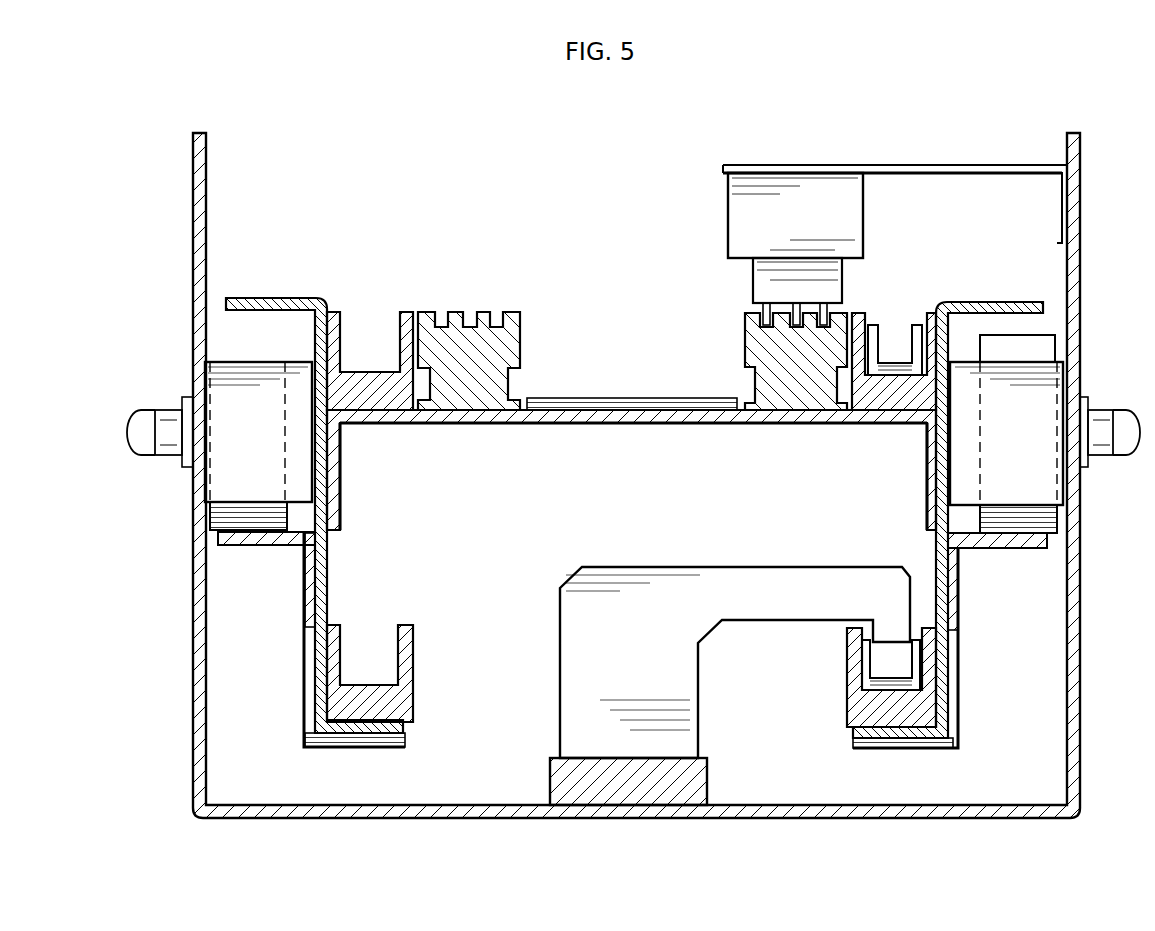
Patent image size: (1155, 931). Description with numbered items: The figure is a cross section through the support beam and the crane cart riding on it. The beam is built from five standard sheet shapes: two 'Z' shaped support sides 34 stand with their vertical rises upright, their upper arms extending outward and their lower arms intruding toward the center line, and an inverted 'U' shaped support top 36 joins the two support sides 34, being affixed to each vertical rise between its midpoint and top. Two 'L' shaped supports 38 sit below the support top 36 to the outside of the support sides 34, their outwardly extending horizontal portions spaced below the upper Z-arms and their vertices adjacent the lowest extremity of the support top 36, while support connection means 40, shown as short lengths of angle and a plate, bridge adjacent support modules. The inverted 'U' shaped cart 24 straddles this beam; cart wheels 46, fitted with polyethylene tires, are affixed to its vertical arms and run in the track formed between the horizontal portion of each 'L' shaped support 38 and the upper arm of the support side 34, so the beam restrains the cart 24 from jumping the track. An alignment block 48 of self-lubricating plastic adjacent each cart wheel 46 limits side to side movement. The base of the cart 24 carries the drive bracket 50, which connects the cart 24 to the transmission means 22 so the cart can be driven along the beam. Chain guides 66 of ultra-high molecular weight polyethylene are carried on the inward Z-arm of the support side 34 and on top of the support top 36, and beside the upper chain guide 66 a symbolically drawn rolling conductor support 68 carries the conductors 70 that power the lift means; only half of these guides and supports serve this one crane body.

The transmission means 22 is at (915, 325).
The cart 24 is at (437, 812).
The support side 34 is at (325, 568).
The support top 36 is at (510, 425).
The 'L' shaped support 38 is at (295, 545).
The support connection means 40 is at (591, 398).
The cart wheel 46 is at (215, 528).
The alignment block 48 is at (220, 478).
The drive bracket 50 is at (693, 580).
The chain guide 66 is at (410, 312).
The rolling conductor support 68 is at (731, 192).
The conductor 70 is at (822, 303).